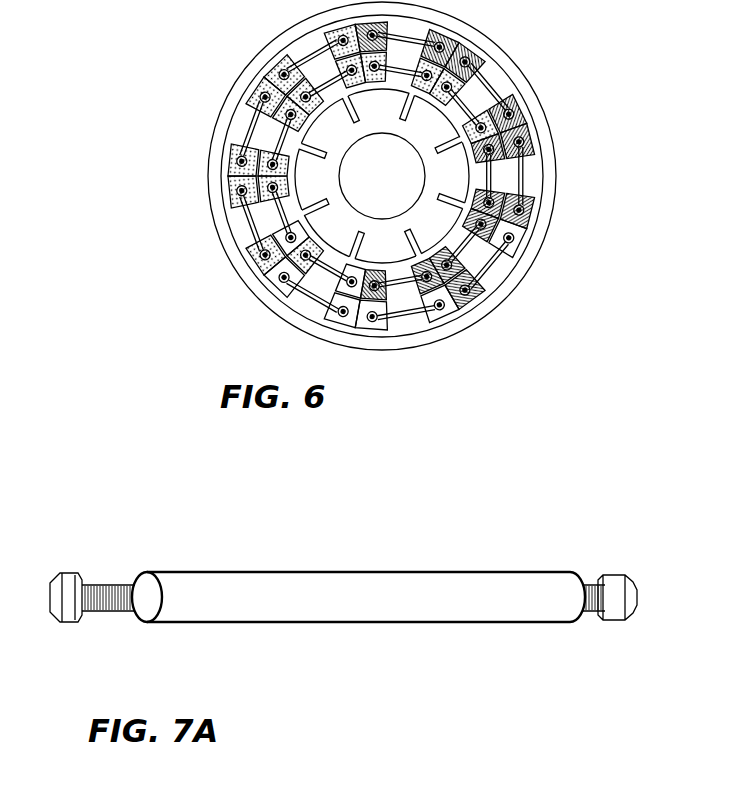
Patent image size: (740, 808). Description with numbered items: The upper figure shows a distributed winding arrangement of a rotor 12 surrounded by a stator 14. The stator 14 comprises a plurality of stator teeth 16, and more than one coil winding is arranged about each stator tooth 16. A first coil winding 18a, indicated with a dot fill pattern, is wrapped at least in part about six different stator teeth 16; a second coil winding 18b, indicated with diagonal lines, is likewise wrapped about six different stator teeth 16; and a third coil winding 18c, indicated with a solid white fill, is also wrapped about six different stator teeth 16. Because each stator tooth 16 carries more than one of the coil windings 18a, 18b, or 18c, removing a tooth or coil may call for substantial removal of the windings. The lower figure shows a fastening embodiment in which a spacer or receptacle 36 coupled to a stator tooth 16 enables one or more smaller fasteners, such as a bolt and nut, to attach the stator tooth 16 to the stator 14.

In FIG. 6, the rotor 12 is at (370, 187).
In FIG. 6, the stator 14 is at (225, 98).
In FIG. 6, the stator tooth 16 is at (354, 207).
In FIG. 6, the first coil winding 18a is at (231, 190).
In FIG. 6, the second coil winding 18b is at (520, 97).
In FIG. 6, the third coil winding 18c is at (480, 290).
In FIG. 7A, the fastener receptacle 36 is at (326, 620).